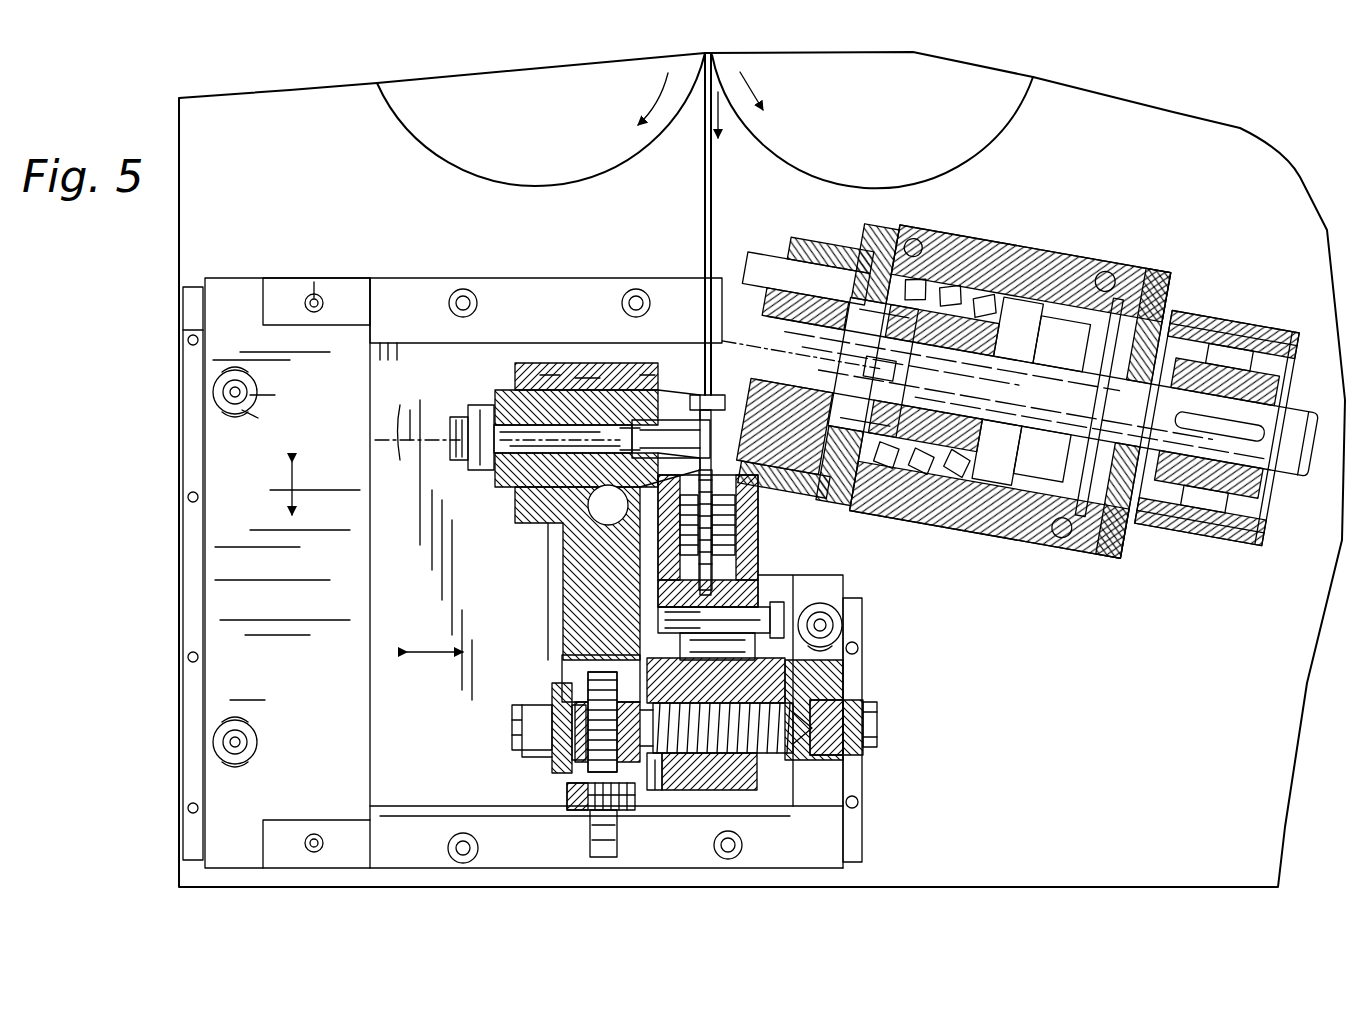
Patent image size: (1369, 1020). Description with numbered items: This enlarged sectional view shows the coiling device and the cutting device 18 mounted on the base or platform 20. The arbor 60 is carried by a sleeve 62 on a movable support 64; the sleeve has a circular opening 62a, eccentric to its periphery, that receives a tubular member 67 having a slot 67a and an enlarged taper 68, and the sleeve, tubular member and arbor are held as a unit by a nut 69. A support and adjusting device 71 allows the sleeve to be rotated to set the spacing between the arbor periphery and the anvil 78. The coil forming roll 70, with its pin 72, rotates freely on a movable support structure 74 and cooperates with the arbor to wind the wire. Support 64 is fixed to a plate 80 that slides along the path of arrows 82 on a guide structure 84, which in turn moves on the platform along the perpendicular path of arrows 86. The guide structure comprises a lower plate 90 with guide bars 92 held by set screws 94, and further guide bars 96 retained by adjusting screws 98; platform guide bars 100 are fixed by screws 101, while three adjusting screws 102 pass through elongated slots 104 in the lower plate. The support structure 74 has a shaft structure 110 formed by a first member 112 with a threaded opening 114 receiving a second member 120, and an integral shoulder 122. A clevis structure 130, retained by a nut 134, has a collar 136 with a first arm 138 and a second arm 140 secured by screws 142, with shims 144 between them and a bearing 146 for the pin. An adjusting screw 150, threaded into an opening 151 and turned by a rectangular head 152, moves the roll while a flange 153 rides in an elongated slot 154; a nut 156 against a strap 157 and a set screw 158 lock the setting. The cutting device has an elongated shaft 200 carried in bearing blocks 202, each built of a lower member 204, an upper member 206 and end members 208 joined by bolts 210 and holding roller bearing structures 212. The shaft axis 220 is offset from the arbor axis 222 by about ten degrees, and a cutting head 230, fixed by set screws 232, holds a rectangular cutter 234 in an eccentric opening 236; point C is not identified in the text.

The cutting device 18 is at (1133, 588).
The base/platform 20 is at (270, 196).
The arbor 60 is at (650, 372).
The sleeve 62 is at (505, 388).
The circular opening 62a is at (545, 370).
The movable support 64 is at (560, 556).
The tubular member 67 is at (488, 422).
The slot 67a is at (582, 372).
The enlarged taper 68 is at (636, 440).
The nut 69 is at (470, 468).
The coil forming roll 70 is at (730, 538).
The support and adjusting device 71 is at (605, 470).
The pin 72 is at (760, 525).
The movable support structure 74 is at (765, 575).
The anvil 78 is at (700, 400).
The plate 80 is at (425, 614).
The arrows (path of plate movement) 82 is at (437, 653).
The guide structure 84 is at (240, 300).
The arrows (path of guide structure movement) 86 is at (288, 490).
The lower plate 90 is at (298, 585).
The guide bars 92 is at (288, 527).
The set screws 94 is at (318, 294).
The further guide bar 96 is at (420, 325).
The adjusting screws 98 is at (463, 290).
The guide bars 100 is at (200, 325).
The screws 101 is at (188, 497).
The adjusting screws 102 is at (212, 393).
The elongated slots 104 is at (258, 418).
The shaft structure 110 is at (858, 755).
The first member 112 is at (880, 725).
The internally threaded opening 114 is at (848, 808).
The second member 120 is at (585, 770).
The shoulder 122 is at (660, 662).
The clevis structure 130 is at (745, 792).
The nut 134 is at (820, 680).
The collar 136 is at (690, 792).
The first arm 138 is at (665, 570).
The second arm 140 is at (820, 577).
The screws 142 is at (665, 596).
The shims 144 is at (825, 665).
The bearing 146 is at (682, 548).
The adjusting screw 150 is at (590, 820).
The threaded opening 151 is at (552, 700).
The rectangular head 152 is at (590, 845).
The flange 153 is at (655, 795).
The elongated slot 154 is at (562, 663).
The nut 156 is at (530, 712).
The strap 157 is at (572, 755).
The set screw 158 is at (850, 600).
The elongated shaft 200 is at (1288, 468).
The bearing blocks 202 is at (968, 245).
The lower member 204 is at (1037, 255).
The upper member 206 is at (1217, 428).
The end members 208 is at (872, 255).
The bolts 210 is at (908, 248).
The roller bearing structures 212 is at (965, 520).
The axis of shaft 220 is at (748, 340).
The axis of arbor 222 is at (398, 404).
The cutting head 230 is at (768, 292).
The set screws 232 is at (845, 362).
The cutter 234 is at (785, 272).
The opening 236 is at (802, 262).
The center C is at (773, 493).